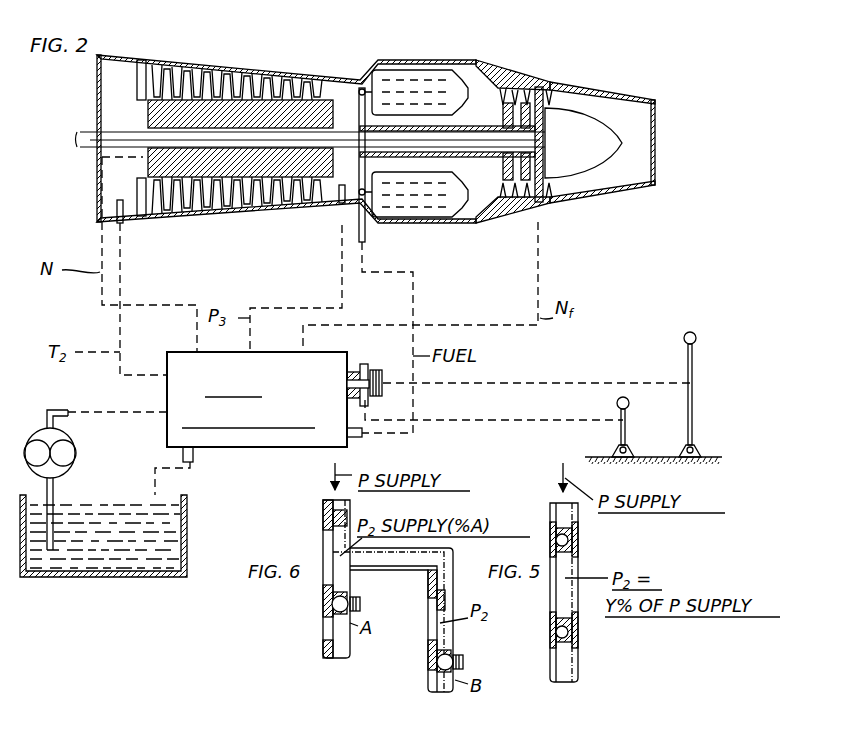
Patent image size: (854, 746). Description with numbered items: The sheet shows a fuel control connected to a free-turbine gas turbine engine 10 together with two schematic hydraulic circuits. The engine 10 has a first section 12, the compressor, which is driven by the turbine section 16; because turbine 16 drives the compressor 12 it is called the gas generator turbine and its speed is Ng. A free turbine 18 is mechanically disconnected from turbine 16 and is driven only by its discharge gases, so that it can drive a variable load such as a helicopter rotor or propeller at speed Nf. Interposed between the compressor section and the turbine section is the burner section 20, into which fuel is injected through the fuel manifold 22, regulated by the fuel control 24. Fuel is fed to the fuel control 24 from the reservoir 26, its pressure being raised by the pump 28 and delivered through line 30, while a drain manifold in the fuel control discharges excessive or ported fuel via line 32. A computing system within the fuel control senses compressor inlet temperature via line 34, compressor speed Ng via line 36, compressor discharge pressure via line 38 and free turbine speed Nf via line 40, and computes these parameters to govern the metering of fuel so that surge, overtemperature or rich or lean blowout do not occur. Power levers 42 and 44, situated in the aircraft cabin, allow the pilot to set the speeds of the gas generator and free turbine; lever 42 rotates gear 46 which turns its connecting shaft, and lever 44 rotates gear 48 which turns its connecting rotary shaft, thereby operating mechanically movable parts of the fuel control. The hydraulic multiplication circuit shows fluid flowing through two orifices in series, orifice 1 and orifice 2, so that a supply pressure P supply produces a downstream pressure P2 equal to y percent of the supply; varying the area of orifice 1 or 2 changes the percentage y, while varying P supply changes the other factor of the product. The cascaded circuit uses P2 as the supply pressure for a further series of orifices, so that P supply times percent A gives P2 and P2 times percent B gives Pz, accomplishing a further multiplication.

In FIG. 2, the gas turbine engine 10 is at (385, 50).
In FIG. 2, the first section 12 is at (243, 64).
In FIG. 2, the turbine section 16 is at (510, 92).
In FIG. 2, the free turbine 18 is at (548, 98).
In FIG. 2, the burner section 20 is at (440, 62).
In FIG. 2, the fuel manifold 22 is at (366, 243).
In FIG. 2, the fuel control 24 is at (263, 452).
In FIG. 2, the reservoir 26 is at (90, 578).
In FIG. 2, the pump 28 is at (75, 462).
In FIG. 2, the line 30 is at (85, 412).
In FIG. 2, the line 32 is at (195, 460).
In FIG. 2, the line 34 is at (125, 262).
In FIG. 2, the line 36 is at (150, 303).
In FIG. 2, the line 38 is at (342, 270).
In FIG. 2, the line 40 is at (540, 272).
In FIG. 2, the power lever 42 is at (697, 405).
In FIG. 2, the power lever 44 is at (628, 432).
In FIG. 2, the gear 46 is at (381, 370).
In FIG. 2, the gear 48 is at (363, 368).
In FIG. 6, the orifice 1 is at (355, 514).
In FIG. 5, the orifice 1 is at (580, 540).
In FIG. 5, the orifice 2 is at (580, 640).